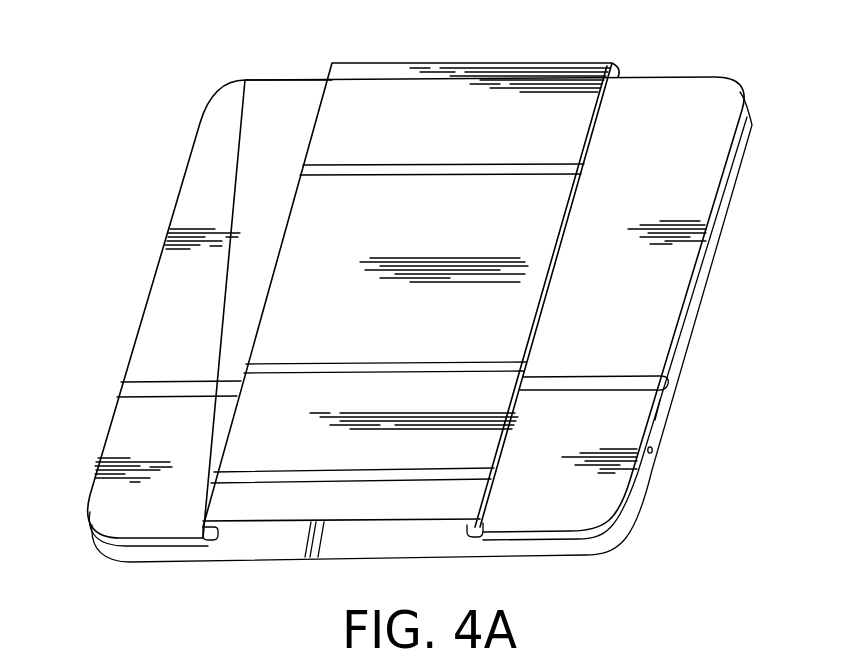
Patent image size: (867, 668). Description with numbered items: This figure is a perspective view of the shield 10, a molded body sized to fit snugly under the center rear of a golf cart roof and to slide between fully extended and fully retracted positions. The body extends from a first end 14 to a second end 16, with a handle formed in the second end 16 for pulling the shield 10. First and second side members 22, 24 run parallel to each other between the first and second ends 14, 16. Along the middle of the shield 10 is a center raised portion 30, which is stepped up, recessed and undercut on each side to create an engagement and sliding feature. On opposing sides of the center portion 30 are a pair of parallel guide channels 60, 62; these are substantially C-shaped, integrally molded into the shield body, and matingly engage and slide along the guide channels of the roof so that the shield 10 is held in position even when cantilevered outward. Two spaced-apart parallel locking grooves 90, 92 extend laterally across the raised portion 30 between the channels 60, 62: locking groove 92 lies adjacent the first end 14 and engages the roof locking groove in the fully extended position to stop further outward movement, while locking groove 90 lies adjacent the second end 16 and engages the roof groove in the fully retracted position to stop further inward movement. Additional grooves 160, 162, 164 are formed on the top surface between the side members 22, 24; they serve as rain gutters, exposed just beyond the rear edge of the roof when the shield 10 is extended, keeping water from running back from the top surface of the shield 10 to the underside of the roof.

The shield 10 is at (163, 302).
The first end 14 is at (278, 553).
The second end 16 is at (297, 78).
The first side member 22 is at (97, 542).
The second side member 24 is at (682, 352).
The center raised portion 30 is at (305, 213).
The guide channel 60 is at (200, 532).
The guide channel 62 is at (482, 527).
The locking groove 90 is at (418, 172).
The locking groove 92 is at (345, 477).
The groove 160 is at (157, 387).
The groove 162 is at (377, 370).
The groove 164 is at (548, 383).